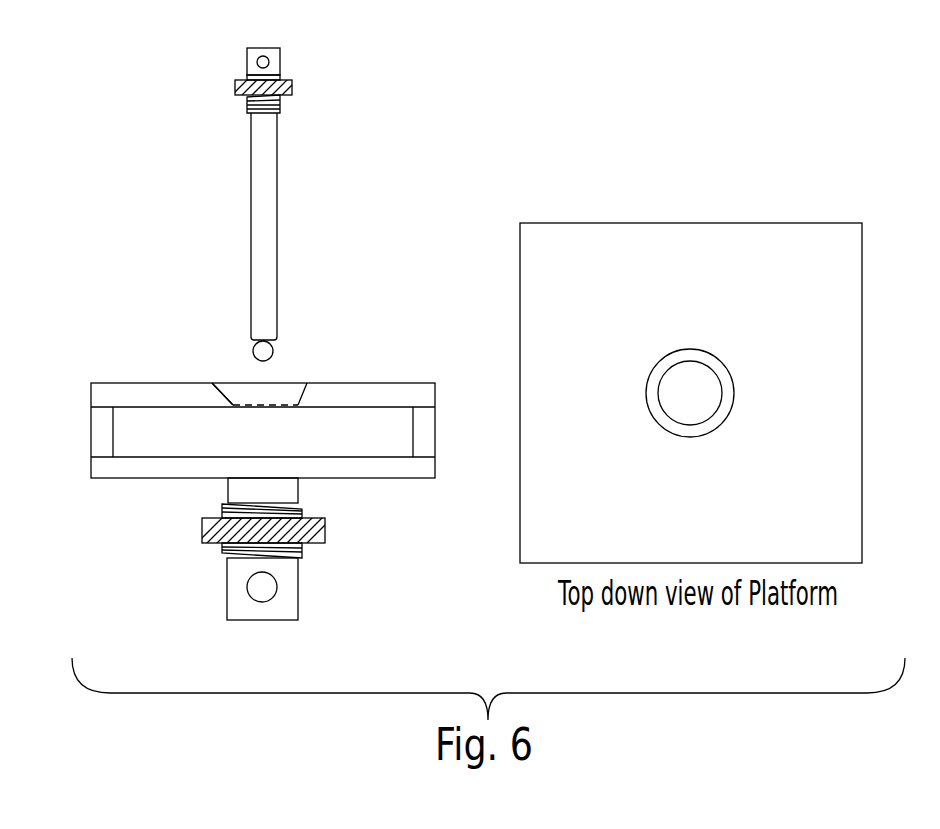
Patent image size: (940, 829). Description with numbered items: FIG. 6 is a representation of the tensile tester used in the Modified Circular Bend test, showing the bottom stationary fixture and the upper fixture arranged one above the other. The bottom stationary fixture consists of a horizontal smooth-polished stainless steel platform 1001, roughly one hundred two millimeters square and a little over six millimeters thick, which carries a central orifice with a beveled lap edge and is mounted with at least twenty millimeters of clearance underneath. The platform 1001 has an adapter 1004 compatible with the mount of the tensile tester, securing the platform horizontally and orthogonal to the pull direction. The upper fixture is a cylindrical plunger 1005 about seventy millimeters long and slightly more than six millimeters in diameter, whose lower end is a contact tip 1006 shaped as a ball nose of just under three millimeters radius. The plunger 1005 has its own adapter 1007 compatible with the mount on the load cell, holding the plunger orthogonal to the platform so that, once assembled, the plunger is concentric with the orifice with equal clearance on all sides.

The platform 1001 is at (135, 374).
The adapter 1004 is at (198, 574).
The cylindrical plunger 1005 is at (227, 198).
The contact tip 1006 is at (287, 347).
The adapter 1007 is at (292, 68).